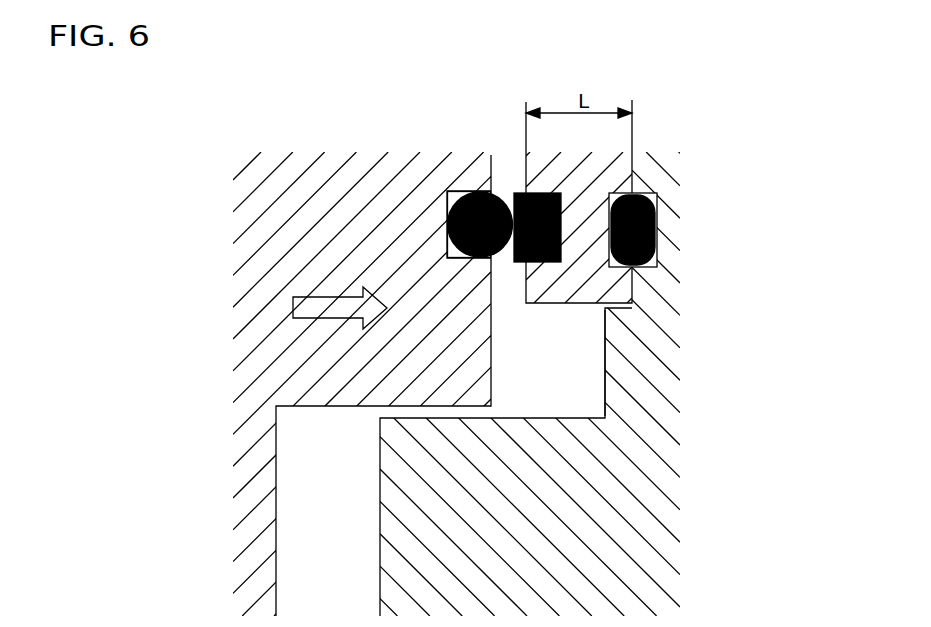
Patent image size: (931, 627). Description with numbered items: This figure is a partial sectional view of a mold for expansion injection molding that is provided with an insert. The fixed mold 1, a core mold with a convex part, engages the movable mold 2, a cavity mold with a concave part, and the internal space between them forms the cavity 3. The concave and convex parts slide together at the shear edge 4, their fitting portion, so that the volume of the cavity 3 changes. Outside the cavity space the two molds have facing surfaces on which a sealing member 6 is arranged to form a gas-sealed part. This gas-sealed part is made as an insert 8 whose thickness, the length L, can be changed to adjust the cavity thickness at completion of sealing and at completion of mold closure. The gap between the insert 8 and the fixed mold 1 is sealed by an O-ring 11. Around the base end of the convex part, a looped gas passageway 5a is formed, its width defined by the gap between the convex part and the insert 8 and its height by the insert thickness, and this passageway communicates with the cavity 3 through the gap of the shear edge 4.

The fixed mold 1 is at (638, 522).
The movable mold 2 is at (270, 233).
The cavity 3 is at (317, 528).
The shear edge 4 is at (432, 412).
The gas passageway 5a is at (577, 387).
The sealing member 6 is at (495, 253).
The insert 8 is at (633, 163).
The O-ring 11 is at (657, 228).